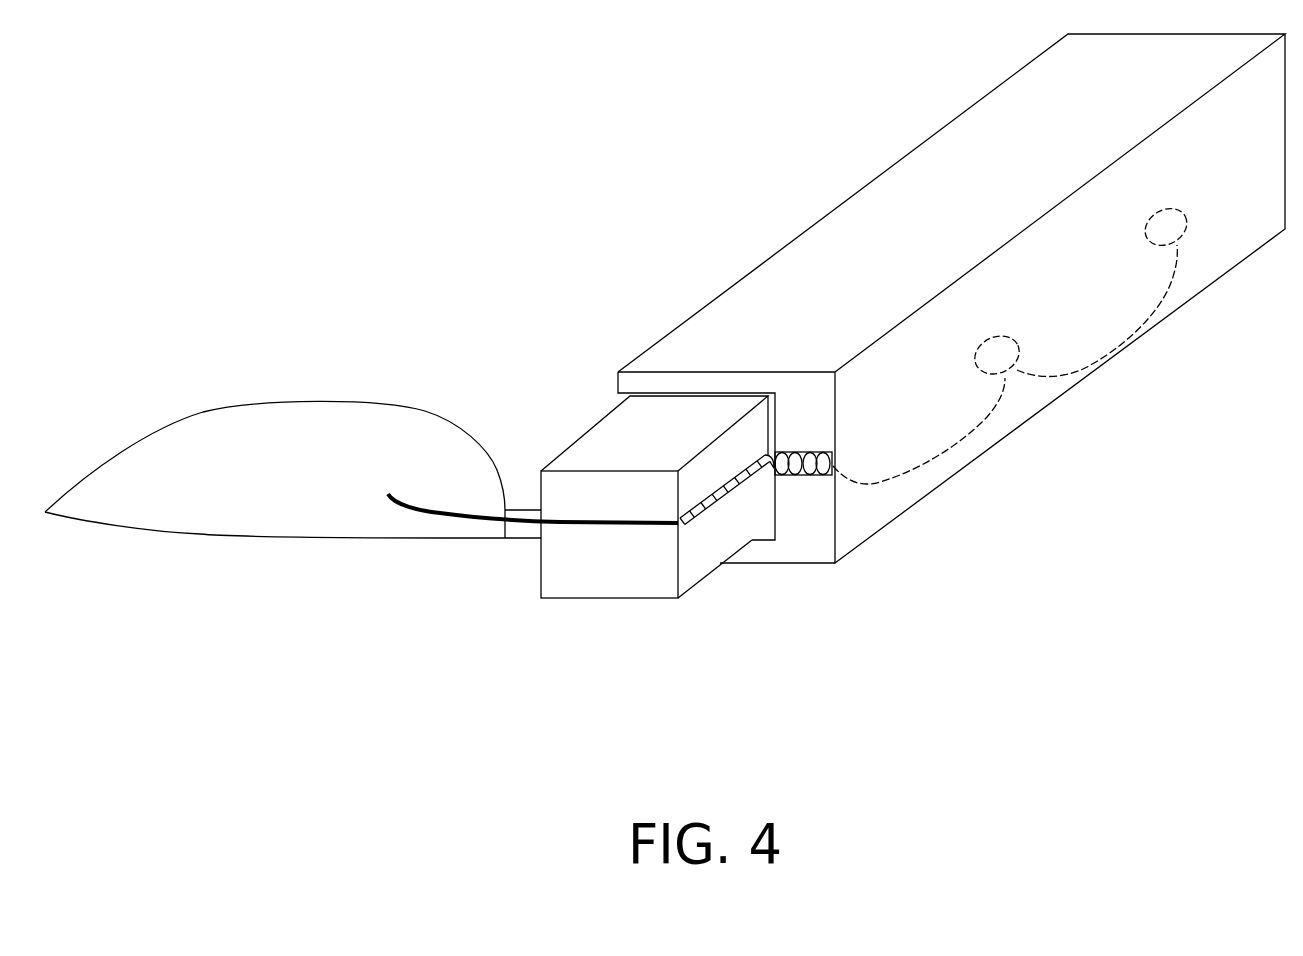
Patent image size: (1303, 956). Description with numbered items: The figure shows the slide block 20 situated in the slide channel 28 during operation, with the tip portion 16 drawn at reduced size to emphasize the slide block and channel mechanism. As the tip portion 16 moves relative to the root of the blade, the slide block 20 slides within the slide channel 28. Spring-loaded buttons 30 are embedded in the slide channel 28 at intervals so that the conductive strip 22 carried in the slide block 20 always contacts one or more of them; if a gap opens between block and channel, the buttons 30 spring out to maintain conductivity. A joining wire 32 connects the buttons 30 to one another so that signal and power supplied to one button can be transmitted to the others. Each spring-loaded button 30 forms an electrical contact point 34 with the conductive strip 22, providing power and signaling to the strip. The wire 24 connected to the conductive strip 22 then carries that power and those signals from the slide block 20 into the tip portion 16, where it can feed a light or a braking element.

The tip portion 16 is at (293, 469).
The slide block 20 is at (654, 497).
The conductive strip 22 is at (702, 510).
The wire 24 is at (467, 517).
The slide channel 28 is at (951, 298).
The spring-loaded buttons 30 is at (1168, 228).
The joining wire 32 is at (992, 410).
The electrical contact point 34 is at (782, 495).